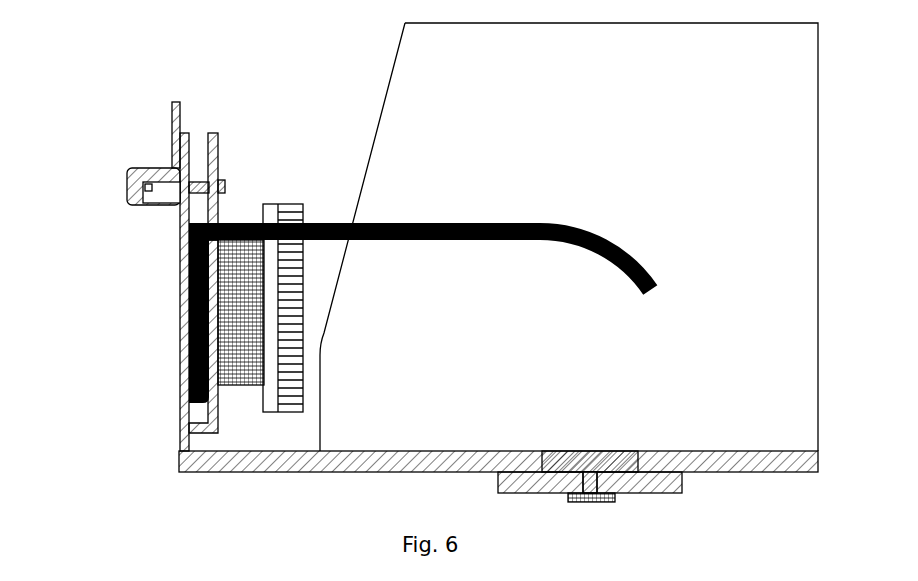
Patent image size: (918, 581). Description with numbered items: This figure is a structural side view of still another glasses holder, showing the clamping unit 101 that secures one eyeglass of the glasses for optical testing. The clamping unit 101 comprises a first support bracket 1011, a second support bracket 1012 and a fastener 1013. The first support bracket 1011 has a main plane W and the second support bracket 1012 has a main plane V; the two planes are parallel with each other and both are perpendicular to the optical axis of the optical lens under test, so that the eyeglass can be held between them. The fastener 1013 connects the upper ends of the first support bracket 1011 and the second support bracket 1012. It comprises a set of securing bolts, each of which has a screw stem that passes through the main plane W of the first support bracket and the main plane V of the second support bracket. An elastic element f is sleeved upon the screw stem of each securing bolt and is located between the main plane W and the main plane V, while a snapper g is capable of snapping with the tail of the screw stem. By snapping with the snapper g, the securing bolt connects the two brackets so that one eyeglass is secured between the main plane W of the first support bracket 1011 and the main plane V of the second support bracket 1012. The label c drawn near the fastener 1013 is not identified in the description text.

The clamping unit 101 is at (351, 292).
The first support bracket 1011 is at (178, 390).
The second support bracket 1012 is at (218, 427).
The fastener 1013 is at (208, 128).
The snapper g is at (140, 170).
The elastic element f is at (190, 180).
The fastening screw c is at (223, 180).
The main plane of the first support bracket W is at (179, 214).
The main plane of the second support bracket V is at (206, 219).